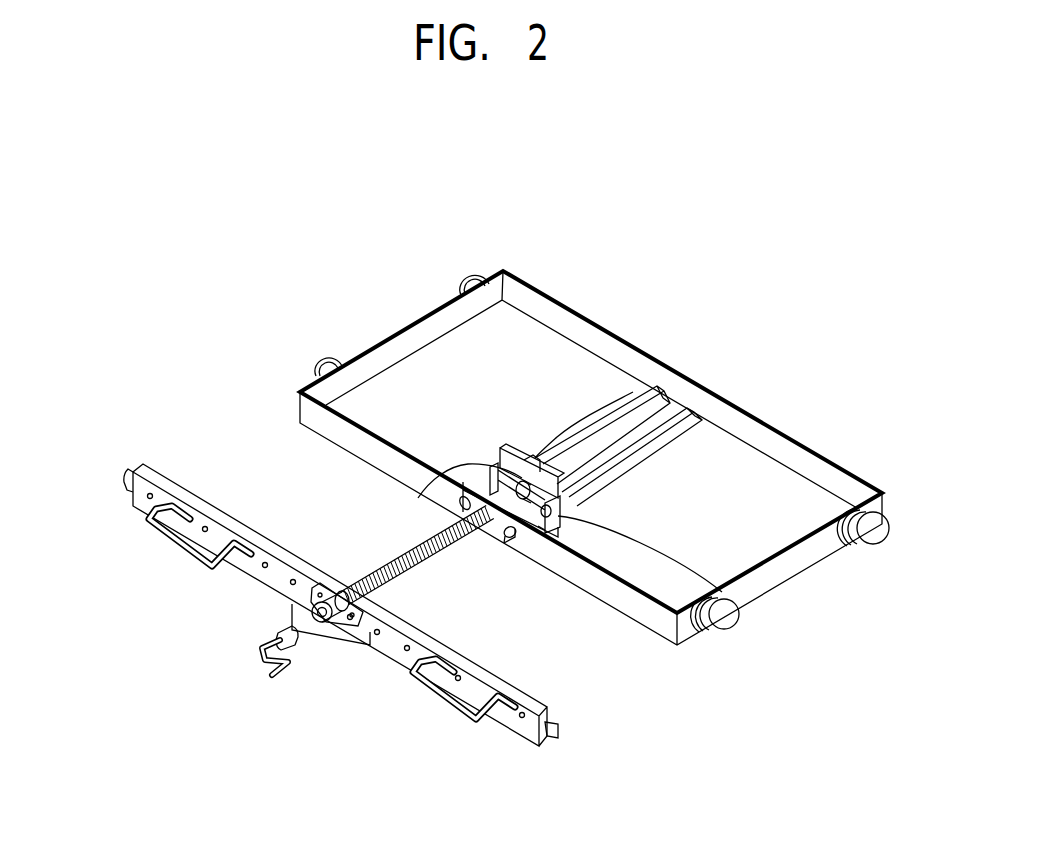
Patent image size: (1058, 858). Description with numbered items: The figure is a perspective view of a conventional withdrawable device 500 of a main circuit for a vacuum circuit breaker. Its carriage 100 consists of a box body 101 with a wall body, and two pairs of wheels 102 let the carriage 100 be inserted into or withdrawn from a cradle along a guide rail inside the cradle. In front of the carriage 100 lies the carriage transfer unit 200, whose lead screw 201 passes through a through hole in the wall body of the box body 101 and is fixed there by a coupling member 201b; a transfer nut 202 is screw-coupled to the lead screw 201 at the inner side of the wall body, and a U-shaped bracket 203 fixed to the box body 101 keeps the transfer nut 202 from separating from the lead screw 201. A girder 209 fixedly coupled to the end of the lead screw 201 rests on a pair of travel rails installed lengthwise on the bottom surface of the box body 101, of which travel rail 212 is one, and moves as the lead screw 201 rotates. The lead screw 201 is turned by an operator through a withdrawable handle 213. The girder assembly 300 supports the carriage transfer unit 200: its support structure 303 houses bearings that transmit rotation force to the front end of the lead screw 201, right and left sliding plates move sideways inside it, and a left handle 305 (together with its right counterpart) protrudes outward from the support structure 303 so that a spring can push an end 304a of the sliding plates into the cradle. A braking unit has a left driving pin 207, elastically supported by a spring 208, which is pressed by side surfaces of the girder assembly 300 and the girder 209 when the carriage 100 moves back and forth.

The carriage 100 is at (598, 455).
The box body 101 is at (357, 345).
The wheels 102 is at (468, 285).
The carriage transfer unit 200 is at (575, 462).
The lead screw 201 is at (400, 575).
The coupling bolt 201b is at (505, 538).
The transfer nut 202 is at (503, 446).
The U-shaped bracket 203 is at (546, 530).
The left driving pin 207 is at (462, 462).
The spring 208 is at (460, 502).
The girder 209 is at (508, 460).
The travel rail 212 is at (632, 393).
The withdrawable handle 213 is at (265, 661).
The girder assembly 300 is at (338, 620).
The support structure 303 is at (393, 649).
The end 304a is at (125, 470).
The left handle 305 is at (177, 548).
The withdrawable device 500 is at (788, 406).